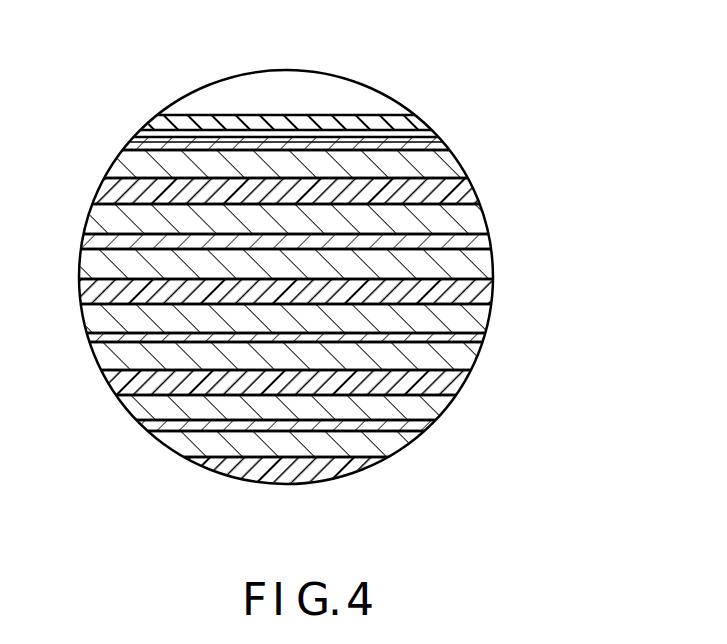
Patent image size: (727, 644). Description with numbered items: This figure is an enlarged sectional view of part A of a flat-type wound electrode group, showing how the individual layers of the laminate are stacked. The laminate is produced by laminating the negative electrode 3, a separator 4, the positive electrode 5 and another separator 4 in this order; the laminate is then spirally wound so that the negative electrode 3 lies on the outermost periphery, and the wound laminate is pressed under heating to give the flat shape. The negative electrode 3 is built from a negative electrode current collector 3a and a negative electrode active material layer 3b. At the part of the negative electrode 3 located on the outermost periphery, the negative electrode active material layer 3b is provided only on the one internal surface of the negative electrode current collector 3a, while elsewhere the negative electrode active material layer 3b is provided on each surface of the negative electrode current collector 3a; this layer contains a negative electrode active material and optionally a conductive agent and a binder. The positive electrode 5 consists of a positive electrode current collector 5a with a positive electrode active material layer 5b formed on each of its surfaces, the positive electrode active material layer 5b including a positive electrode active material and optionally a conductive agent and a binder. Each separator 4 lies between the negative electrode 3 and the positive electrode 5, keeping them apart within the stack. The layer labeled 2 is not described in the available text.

The part A is at (190, 103).
The surface layer 2 is at (423, 117).
The negative electrode 3 is at (341, 252).
The negative electrode current collector 3a is at (437, 145).
The negative electrode active material layer 3b is at (440, 168).
The separator 4 is at (108, 192).
The positive electrode 5 is at (340, 350).
The positive electrode current collector 5a is at (468, 243).
The positive electrode active material layer 5b is at (467, 213).